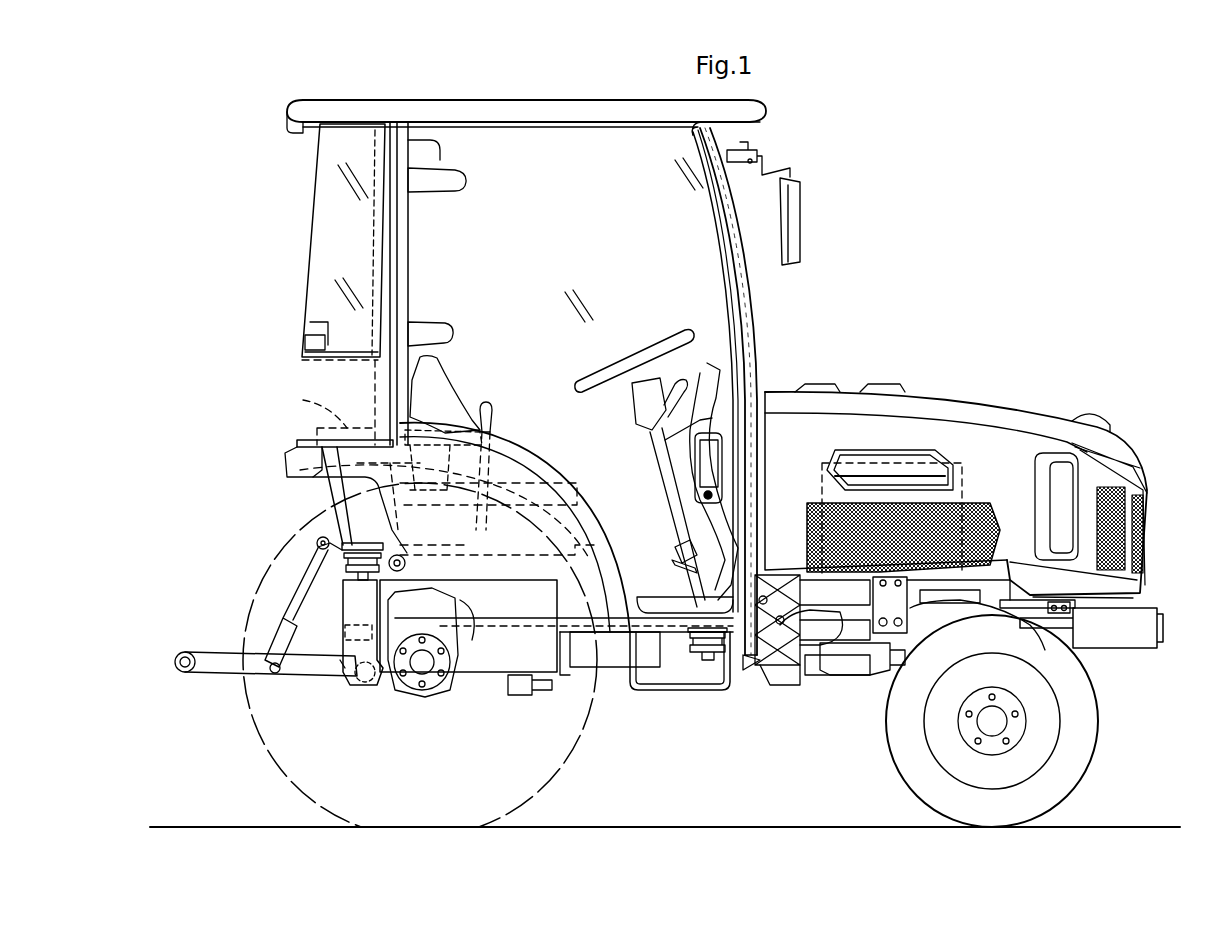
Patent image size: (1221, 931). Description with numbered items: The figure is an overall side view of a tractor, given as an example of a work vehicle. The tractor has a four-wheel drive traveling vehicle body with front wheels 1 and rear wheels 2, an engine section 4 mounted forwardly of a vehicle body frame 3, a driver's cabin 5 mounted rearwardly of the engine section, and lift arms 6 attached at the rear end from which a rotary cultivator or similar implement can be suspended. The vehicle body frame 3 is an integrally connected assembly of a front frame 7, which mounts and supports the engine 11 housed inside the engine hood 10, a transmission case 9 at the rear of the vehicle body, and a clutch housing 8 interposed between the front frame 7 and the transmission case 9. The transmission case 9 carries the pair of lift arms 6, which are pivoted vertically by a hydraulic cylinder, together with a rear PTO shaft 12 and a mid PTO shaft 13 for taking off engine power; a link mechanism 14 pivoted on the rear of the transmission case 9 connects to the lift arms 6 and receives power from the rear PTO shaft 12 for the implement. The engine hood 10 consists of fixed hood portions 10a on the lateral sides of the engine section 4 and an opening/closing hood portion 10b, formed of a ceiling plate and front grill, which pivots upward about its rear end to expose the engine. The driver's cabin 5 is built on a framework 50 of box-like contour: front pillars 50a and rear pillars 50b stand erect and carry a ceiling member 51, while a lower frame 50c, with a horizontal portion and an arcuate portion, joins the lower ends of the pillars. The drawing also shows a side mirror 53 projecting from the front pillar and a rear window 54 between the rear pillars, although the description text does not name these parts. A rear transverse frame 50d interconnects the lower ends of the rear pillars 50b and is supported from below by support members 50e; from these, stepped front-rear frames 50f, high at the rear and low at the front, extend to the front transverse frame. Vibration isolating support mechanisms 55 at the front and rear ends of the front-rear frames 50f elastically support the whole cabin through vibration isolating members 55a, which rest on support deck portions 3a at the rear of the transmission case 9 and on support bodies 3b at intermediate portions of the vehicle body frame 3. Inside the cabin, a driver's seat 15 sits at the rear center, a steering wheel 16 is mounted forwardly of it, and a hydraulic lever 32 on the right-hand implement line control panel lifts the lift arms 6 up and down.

The front wheels 1 is at (1078, 780).
The rear wheels 2 is at (270, 758).
The vehicle body frame 3 is at (1162, 600).
The support deck portions 3a is at (355, 665).
The support bodies 3b is at (712, 660).
The engine section 4 is at (1013, 320).
The driver's cabin 5 is at (778, 104).
The lift arms 6 is at (389, 562).
The front frame 7 is at (1120, 650).
The clutch housing 8 is at (770, 655).
The transmission case 9 is at (478, 660).
The engine hood 10 is at (914, 392).
The fixed hood portions 10a is at (983, 530).
The opening/closing hood portion 10b is at (1028, 412).
The engine 11 is at (962, 463).
The rear PTO shaft 12 is at (345, 632).
The mid PTO shaft 13 is at (540, 692).
The link mechanism 14 is at (225, 642).
The driver's seat 15 is at (460, 410).
The steering wheel 16 is at (660, 345).
The hydraulic lever 32 is at (495, 420).
The framework 50 is at (758, 321).
The front pillars 50a is at (752, 356).
The rear pillars 50b is at (392, 242).
The lower frame 50c is at (585, 525).
The rear transverse frame 50d is at (340, 400).
The support members 50e is at (335, 495).
The front-rear frames 50f is at (490, 590).
The ceiling member 51 is at (300, 108).
The side mirror 53 is at (705, 276).
The rear window 54 is at (312, 229).
The vibration isolating support mechanisms 55 is at (336, 580).
The vibration isolating members 55a is at (343, 547).